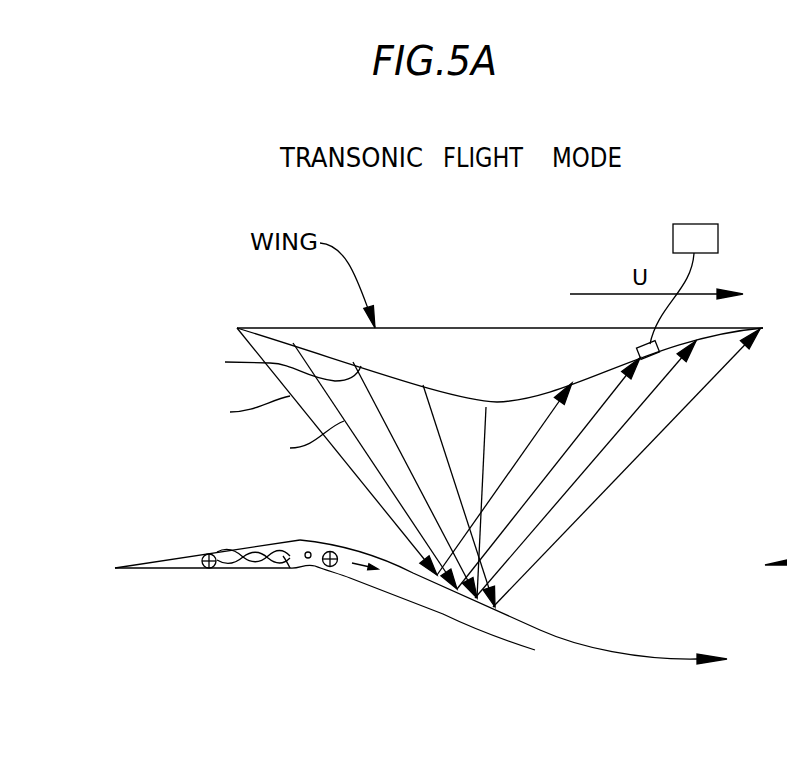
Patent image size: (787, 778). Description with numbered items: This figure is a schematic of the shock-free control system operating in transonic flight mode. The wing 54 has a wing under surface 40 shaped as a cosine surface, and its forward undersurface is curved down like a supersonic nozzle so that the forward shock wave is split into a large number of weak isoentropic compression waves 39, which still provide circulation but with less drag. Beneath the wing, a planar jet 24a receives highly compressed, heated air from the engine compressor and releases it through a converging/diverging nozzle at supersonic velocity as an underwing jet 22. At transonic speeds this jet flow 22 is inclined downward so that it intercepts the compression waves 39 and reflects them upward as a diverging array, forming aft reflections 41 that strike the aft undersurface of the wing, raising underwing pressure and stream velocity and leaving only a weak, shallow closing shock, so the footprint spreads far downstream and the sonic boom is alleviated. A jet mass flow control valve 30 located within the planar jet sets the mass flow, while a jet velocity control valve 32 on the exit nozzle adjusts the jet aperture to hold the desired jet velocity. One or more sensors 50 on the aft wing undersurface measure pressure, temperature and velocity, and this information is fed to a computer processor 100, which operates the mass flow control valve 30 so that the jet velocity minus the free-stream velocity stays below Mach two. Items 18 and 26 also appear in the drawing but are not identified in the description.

The computer processor 100 is at (697, 224).
The wing 54 is at (593, 371).
The sensor 50 is at (660, 346).
The isoentropic compression waves 39 is at (274, 406).
The wing under surface 40 is at (486, 407).
The aft reflections 41 is at (683, 412).
The fuselage body 18 is at (310, 548).
The jet mass flow control valve 30 is at (205, 554).
The flow passage 26 is at (277, 563).
The underwing jet 22 is at (413, 582).
The jet velocity control valve 32 is at (333, 573).
The planar jet 24a is at (182, 586).